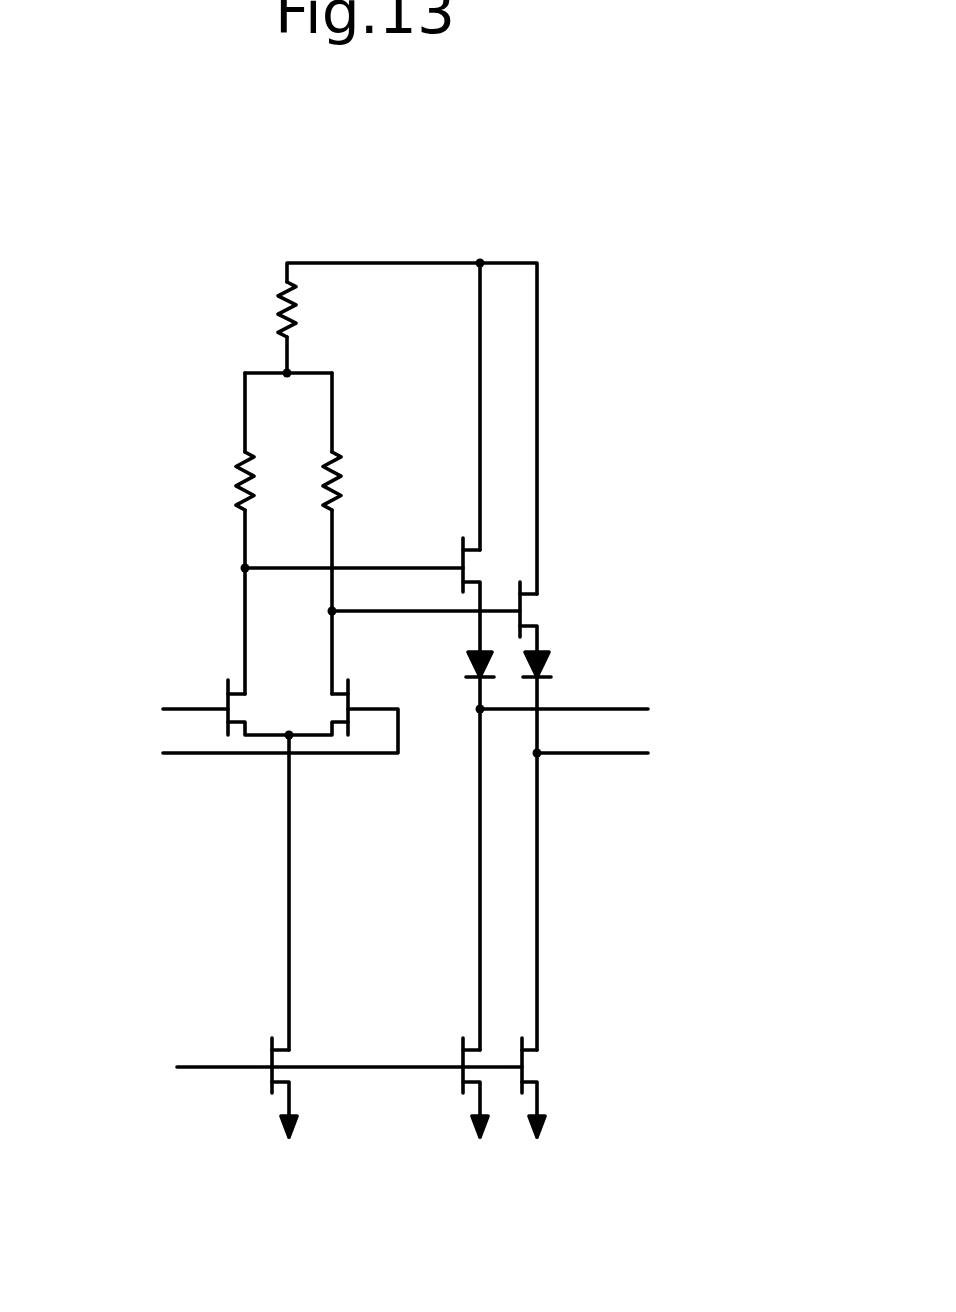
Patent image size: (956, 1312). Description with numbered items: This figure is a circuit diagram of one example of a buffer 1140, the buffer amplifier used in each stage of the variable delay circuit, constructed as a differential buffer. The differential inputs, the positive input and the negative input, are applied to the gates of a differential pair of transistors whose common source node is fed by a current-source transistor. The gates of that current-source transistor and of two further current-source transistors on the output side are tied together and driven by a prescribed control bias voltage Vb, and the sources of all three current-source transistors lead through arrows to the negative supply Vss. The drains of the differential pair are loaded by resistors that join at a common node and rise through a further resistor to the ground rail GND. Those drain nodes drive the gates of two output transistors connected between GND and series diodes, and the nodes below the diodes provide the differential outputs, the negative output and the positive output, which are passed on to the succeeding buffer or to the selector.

The buffer 1140 is at (388, 186).
The ground GND is at (347, 415).
The control bias voltage Vb is at (321, 1068).
The negative supply voltage Vss is at (402, 1153).